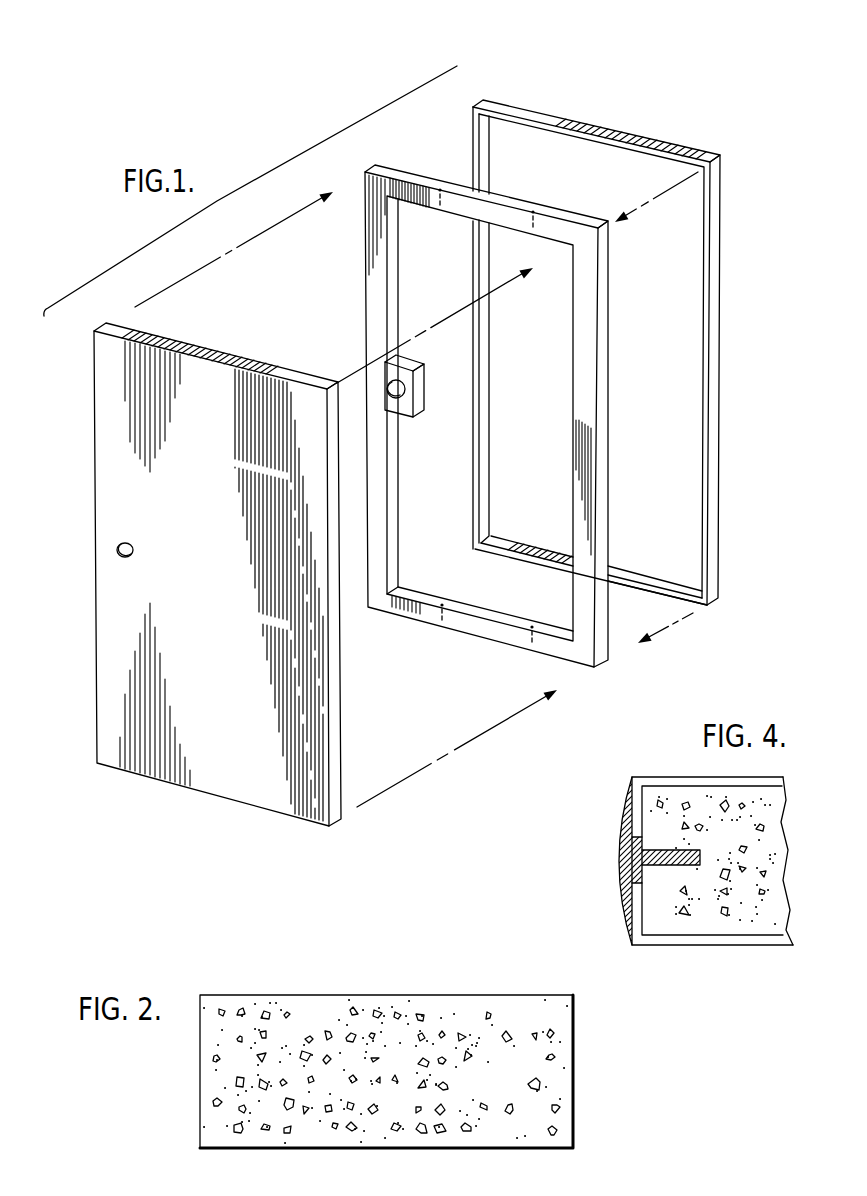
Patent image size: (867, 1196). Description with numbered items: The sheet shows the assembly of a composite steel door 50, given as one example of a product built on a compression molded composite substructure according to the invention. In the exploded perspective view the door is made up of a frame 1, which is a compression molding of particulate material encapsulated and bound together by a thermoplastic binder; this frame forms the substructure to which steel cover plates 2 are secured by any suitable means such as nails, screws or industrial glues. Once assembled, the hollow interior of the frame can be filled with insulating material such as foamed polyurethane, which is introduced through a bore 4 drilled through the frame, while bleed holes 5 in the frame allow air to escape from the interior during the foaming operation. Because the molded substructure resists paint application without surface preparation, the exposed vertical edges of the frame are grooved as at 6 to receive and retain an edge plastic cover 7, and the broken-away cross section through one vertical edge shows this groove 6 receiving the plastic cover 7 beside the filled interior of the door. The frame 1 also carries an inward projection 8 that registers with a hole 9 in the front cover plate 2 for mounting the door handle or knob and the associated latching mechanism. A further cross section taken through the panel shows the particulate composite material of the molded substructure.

In FIG. 1, the steel door 50 is at (472, 83).
In FIG. 1, the frame 1 is at (603, 313).
In FIG. 1, the steel cover plates 2 is at (200, 691).
In FIG. 1, the bore 4 is at (488, 617).
In FIG. 1, the bleed holes 5 is at (440, 187).
In FIG. 4, the groove 6 is at (678, 849).
In FIG. 4, the edge plastic cover 7 is at (624, 861).
In FIG. 1, the inward projection 8 is at (420, 398).
In FIG. 1, the hole 9 is at (128, 541).